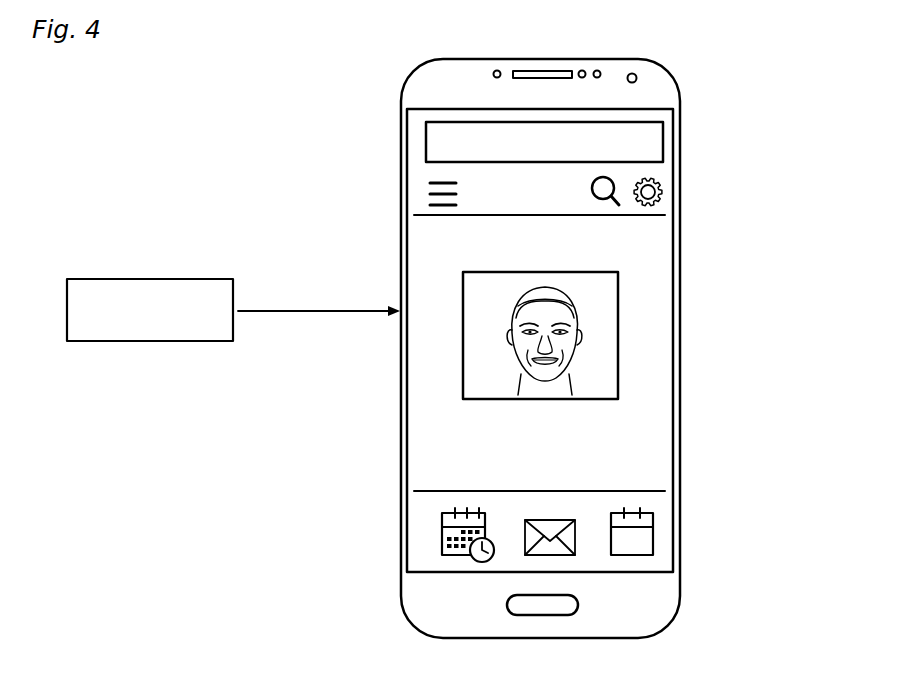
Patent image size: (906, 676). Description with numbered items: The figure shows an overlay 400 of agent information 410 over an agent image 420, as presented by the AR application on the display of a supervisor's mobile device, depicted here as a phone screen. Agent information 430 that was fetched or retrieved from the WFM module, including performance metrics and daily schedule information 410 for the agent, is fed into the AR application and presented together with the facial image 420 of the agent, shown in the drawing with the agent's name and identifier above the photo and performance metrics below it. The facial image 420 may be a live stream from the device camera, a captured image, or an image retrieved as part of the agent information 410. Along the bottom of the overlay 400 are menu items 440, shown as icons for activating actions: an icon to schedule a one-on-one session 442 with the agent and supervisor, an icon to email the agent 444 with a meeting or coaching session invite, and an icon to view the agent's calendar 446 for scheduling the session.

The overlay 400 is at (731, 161).
The agent information 410 is at (698, 439).
The agent image 420 is at (618, 322).
The agent information fetched from WFM 430 is at (147, 341).
The menu items 440 is at (699, 507).
The schedule a one-on-one session icon 442 is at (442, 537).
The email agent icon 444 is at (565, 556).
The view calendar icon 446 is at (653, 538).